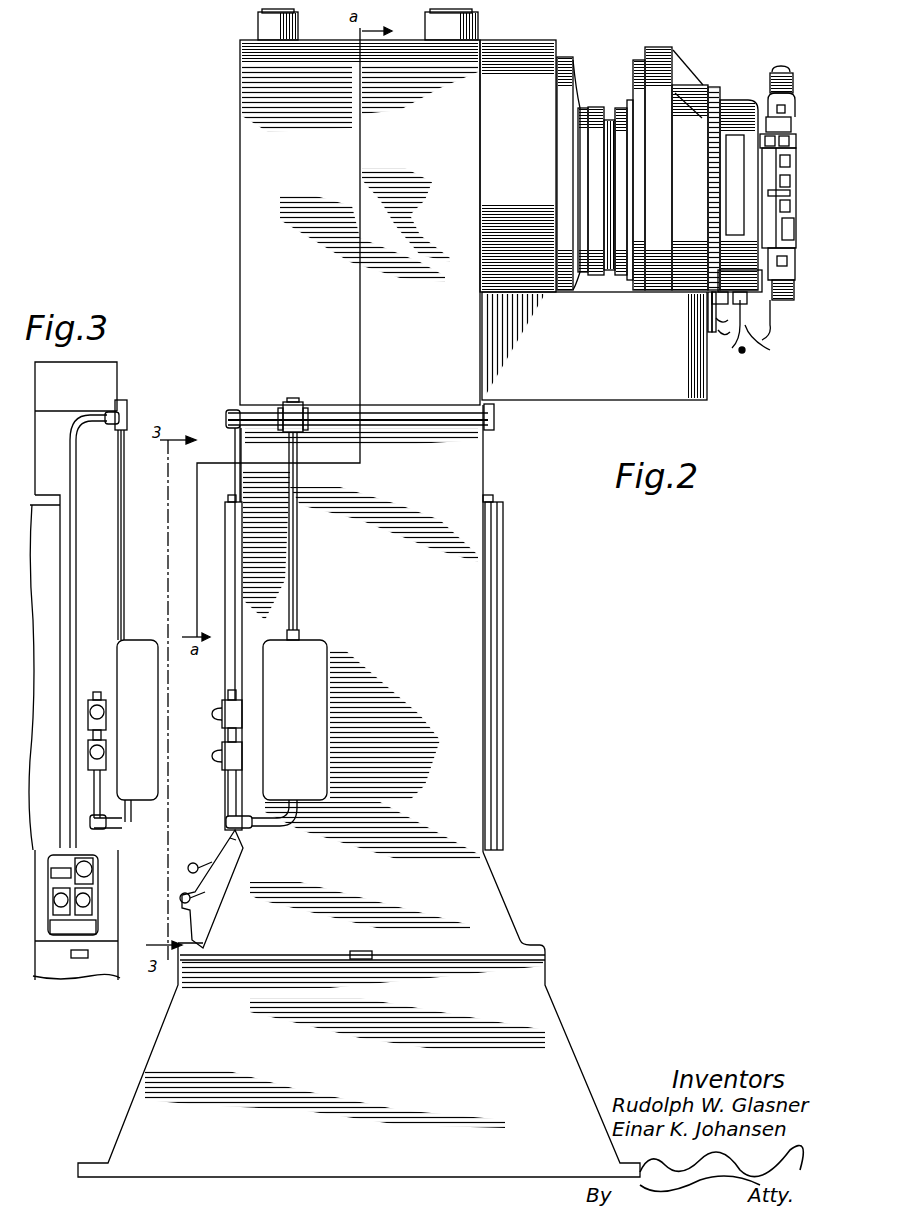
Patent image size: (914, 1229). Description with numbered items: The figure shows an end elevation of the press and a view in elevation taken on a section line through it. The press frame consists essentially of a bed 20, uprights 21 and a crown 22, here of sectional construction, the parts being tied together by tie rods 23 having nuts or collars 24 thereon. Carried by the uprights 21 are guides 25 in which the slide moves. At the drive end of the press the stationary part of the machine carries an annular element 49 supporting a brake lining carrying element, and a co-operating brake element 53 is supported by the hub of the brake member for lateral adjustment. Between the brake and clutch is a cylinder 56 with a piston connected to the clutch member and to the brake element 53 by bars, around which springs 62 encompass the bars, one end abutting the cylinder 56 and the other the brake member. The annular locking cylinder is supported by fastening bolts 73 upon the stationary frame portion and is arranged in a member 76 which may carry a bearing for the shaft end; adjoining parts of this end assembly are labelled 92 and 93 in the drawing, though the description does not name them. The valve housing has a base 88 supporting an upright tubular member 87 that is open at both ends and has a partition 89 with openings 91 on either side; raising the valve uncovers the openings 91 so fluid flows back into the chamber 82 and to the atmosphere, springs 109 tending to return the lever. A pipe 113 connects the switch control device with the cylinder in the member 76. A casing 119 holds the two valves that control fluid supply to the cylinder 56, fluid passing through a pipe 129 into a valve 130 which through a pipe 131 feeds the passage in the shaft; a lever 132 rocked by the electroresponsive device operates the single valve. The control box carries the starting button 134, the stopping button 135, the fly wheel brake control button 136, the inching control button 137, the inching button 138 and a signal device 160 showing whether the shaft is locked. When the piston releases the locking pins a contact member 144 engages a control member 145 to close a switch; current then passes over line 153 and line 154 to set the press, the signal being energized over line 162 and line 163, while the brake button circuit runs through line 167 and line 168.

In FIG. 2, the bed 20 is at (432, 968).
In FIG. 2, the uprights 21 is at (475, 468).
In FIG. 2, the crown 22 is at (240, 213).
In FIG. 3, the crown 22 is at (104, 380).
In FIG. 2, the tie rods 23 is at (266, 14).
In FIG. 2, the nuts or collars 24 is at (263, 34).
In FIG. 2, the guides 25 is at (238, 558).
In FIG. 2, the annular element 49 is at (640, 185).
In FIG. 2, the brake element 53 is at (628, 100).
In FIG. 2, the cylinder 56 is at (603, 284).
In FIG. 2, the springs 62 is at (609, 120).
In FIG. 2, the fastening bolts 73 is at (714, 90).
In FIG. 2, the member 76 is at (740, 104).
In FIG. 2, the chamber 82 is at (795, 98).
In FIG. 2, the tubular member 87 is at (788, 180).
In FIG. 2, the base 88 is at (790, 124).
In FIG. 2, the partition 89 is at (790, 143).
In FIG. 2, the openings 91 is at (678, 60).
In FIG. 2, the cylinder flange 92 is at (558, 50).
In FIG. 2, the gland 93 is at (573, 66).
In FIG. 2, the springs 109 is at (768, 85).
In FIG. 2, the pipe 113 is at (760, 165).
In FIG. 2, the casing 119 is at (790, 235).
In FIG. 2, the pipe 129 is at (790, 208).
In FIG. 2, the valve 130 is at (795, 300).
In FIG. 2, the pipe 131 is at (752, 232).
In FIG. 2, the lever 132 is at (776, 320).
In FIG. 2, the starting button 134 is at (220, 757).
In FIG. 3, the starting button 134 is at (106, 750).
In FIG. 2, the stopping button 135 is at (220, 716).
In FIG. 3, the stopping button 135 is at (106, 712).
In FIG. 2, the fly wheel brake control button 136 is at (208, 889).
In FIG. 3, the fly wheel brake control button 136 is at (95, 866).
In FIG. 3, the inching control button 137 is at (55, 905).
In FIG. 2, the inching button 138 is at (180, 896).
In FIG. 3, the inching button 138 is at (92, 905).
In FIG. 2, the contact member 144 is at (734, 300).
In FIG. 2, the control member 145 is at (731, 351).
In FIG. 2, the line 153 is at (725, 325).
In FIG. 2, the line 154 is at (728, 336).
In FIG. 3, the signal device 160 is at (51, 872).
In FIG. 2, the line 162 is at (714, 317).
In FIG. 2, the line 163 is at (708, 308).
In FIG. 2, the line 167 is at (773, 344).
In FIG. 2, the line 168 is at (742, 340).